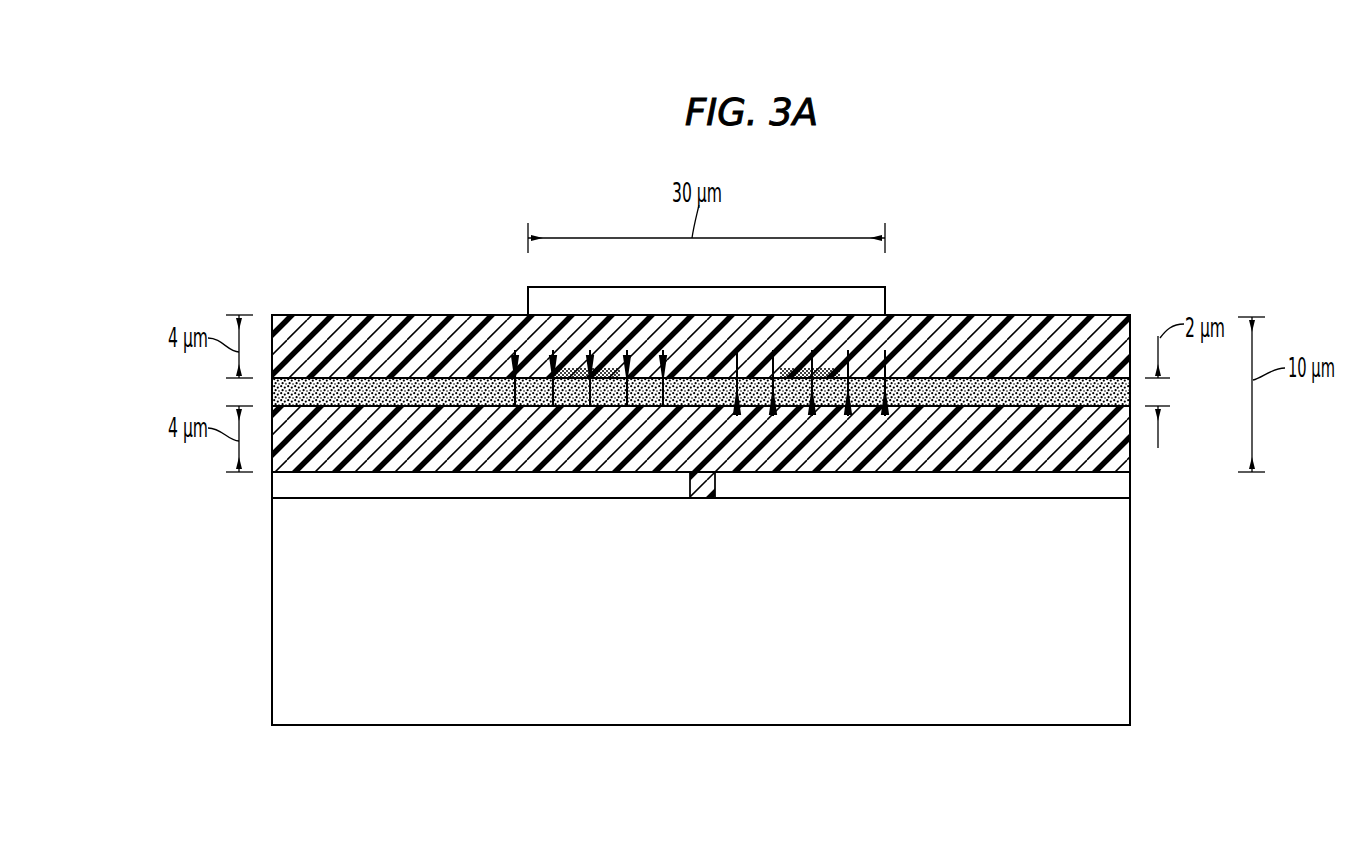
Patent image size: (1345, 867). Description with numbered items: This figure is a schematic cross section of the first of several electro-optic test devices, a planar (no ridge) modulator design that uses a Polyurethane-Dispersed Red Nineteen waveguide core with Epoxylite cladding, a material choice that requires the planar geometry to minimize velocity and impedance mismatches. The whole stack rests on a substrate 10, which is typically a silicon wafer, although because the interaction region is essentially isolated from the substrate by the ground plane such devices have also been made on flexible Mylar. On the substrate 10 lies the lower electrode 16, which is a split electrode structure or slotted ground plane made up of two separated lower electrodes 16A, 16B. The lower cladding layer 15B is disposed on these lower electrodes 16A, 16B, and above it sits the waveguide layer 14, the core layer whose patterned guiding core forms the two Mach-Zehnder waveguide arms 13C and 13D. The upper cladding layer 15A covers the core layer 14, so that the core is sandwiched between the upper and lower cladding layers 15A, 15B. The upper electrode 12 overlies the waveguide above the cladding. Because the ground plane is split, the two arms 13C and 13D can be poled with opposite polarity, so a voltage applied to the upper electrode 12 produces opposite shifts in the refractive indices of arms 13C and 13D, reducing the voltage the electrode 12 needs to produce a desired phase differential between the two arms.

The substrate 10 is at (1132, 622).
The upper electrode 12 is at (528, 305).
The waveguide arm 13C is at (570, 380).
The waveguide arm 13D is at (825, 378).
The waveguide layer 14 is at (985, 377).
The upper cladding layer 15A is at (1103, 315).
The lower cladding layer 15B is at (1027, 453).
The lower electrode 16 is at (738, 498).
The lower electrode 16A is at (1133, 487).
The lower electrode 16B is at (272, 482).